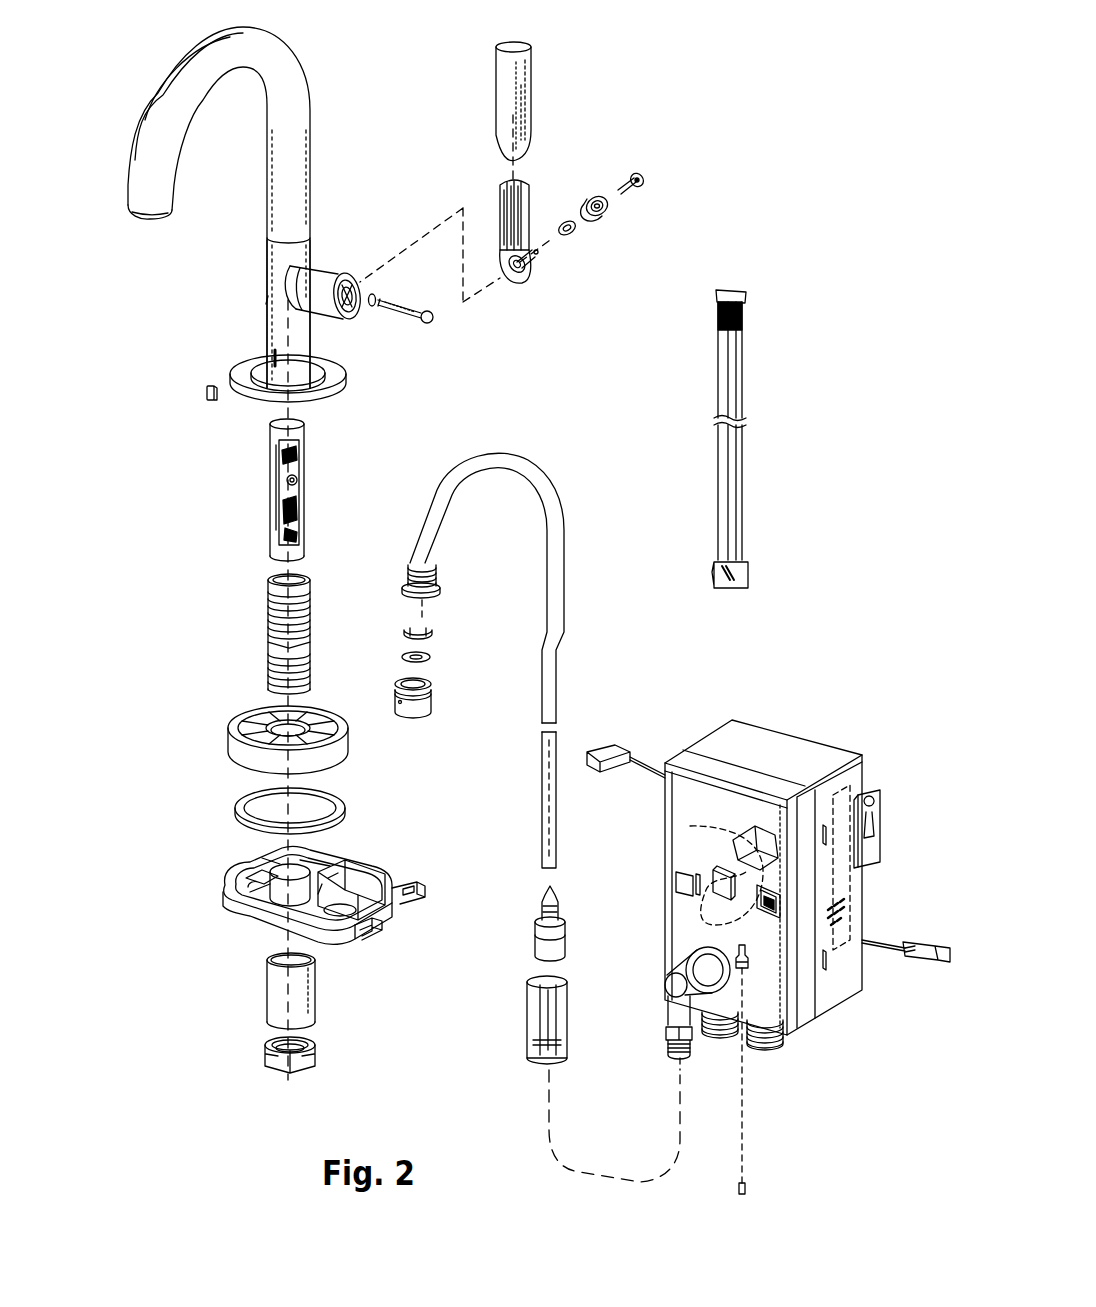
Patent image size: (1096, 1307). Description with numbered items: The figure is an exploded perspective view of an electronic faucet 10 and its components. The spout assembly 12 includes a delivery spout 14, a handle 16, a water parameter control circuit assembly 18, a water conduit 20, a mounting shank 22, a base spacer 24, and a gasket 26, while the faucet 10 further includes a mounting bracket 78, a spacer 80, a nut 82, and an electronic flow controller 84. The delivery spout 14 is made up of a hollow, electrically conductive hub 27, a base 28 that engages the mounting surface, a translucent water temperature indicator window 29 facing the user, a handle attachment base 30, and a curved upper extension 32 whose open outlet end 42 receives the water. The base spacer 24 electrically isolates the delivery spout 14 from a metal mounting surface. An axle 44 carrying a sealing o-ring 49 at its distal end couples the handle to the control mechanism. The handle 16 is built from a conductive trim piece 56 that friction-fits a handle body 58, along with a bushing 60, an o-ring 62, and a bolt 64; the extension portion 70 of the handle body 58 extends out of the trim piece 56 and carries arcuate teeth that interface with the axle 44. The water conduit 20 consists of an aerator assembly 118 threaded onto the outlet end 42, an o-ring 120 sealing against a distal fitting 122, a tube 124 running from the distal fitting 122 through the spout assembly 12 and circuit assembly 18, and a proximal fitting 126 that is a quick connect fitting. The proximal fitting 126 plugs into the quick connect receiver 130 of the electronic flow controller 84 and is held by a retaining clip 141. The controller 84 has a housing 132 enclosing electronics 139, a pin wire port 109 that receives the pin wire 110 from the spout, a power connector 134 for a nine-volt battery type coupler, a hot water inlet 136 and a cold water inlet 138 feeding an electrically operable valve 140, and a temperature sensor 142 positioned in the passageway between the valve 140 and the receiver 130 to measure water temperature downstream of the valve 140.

The electronic faucet 10 is at (745, 110).
The spout assembly 12 is at (320, 65).
The delivery spout 14 is at (248, 272).
The handle 16 is at (540, 95).
The water parameter control circuit assembly 18 is at (255, 490).
The water conduit 20 is at (570, 672).
The mounting shank 22 is at (270, 622).
The base spacer 24 is at (232, 740).
The gasket 26 is at (238, 808).
The hub 27 is at (268, 300).
The base 28 is at (335, 377).
The water temperature indicator window 29 is at (203, 393).
The handle attachment base 30 is at (333, 266).
The upper extension 32 is at (152, 92).
The outlet end 42 is at (150, 218).
The axle 44 is at (418, 320).
The sealing o-ring 49 is at (373, 306).
The trim piece 56 is at (505, 100).
The handle body 58 is at (499, 200).
The bushing 60 is at (595, 200).
The o-ring 62 is at (570, 240).
The bolt 64 is at (645, 185).
The extension portion 70 is at (522, 292).
The mounting bracket 78 is at (225, 892).
The spacer 80 is at (268, 985).
The nut 82 is at (263, 1050).
The electronic flow controller 84 is at (755, 735).
The pin wire port 109 is at (750, 905).
The pin wire 110 is at (735, 385).
The aerator assembly 118 is at (415, 720).
The o-ring 120 is at (432, 660).
The distal fitting 122 is at (445, 580).
The tube 124 is at (540, 820).
The proximal fitting 126 is at (535, 935).
The quick connect receiver 130 is at (673, 1065).
The housing 132 is at (820, 750).
The power connector 134 is at (658, 770).
The hot water inlet 136 is at (720, 1042).
The cold water inlet 138 is at (775, 1052).
The electronics 139 is at (850, 780).
The valve 140 is at (690, 826).
The retaining clip 141 is at (528, 1012).
The temperature sensor 142 is at (745, 975).